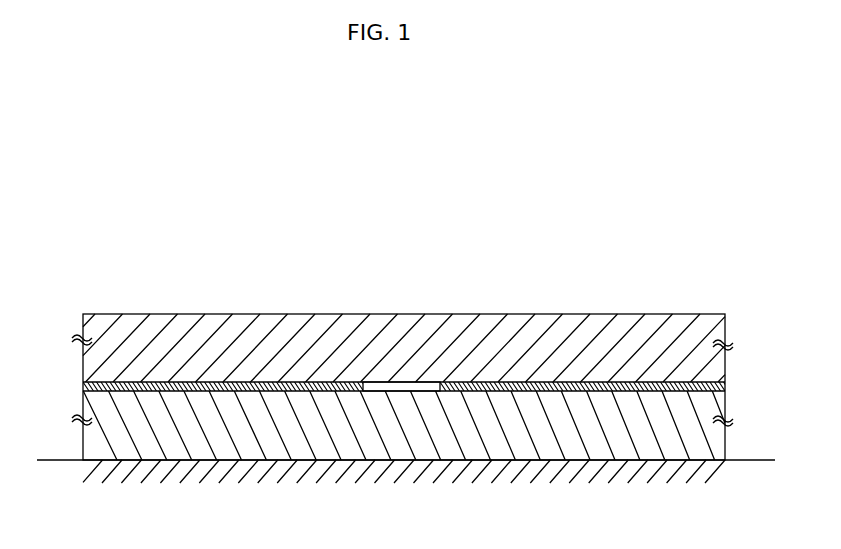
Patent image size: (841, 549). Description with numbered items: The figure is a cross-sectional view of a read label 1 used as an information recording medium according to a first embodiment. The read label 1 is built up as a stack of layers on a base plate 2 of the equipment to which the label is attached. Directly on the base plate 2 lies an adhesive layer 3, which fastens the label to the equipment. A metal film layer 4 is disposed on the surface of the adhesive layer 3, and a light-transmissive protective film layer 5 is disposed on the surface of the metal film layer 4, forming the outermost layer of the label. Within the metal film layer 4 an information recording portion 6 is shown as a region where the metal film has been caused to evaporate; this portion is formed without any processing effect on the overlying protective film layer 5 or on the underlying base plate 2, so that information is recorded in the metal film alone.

The read label 1 is at (782, 314).
The base plate 2 is at (123, 476).
The adhesive layer 3 is at (118, 410).
The metal film layer 4 is at (80, 386).
The protective film layer 5 is at (106, 365).
The information recording portion 6 is at (420, 386).